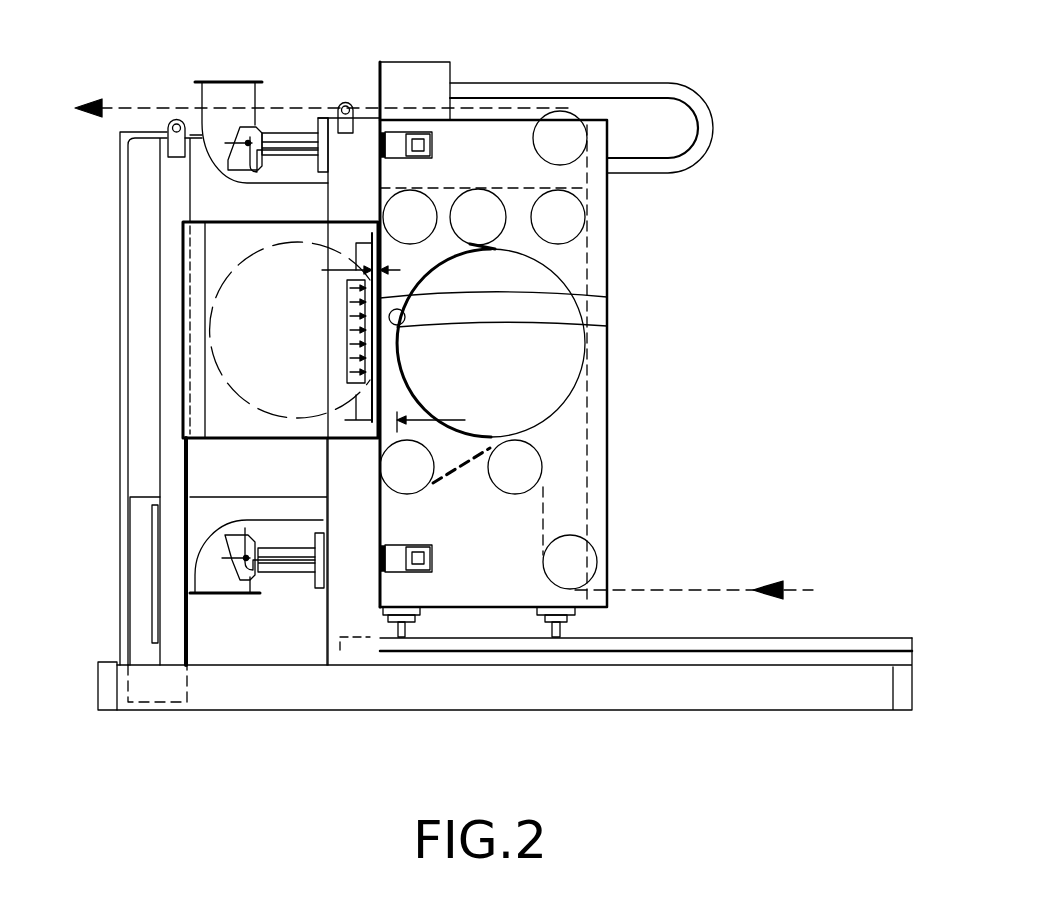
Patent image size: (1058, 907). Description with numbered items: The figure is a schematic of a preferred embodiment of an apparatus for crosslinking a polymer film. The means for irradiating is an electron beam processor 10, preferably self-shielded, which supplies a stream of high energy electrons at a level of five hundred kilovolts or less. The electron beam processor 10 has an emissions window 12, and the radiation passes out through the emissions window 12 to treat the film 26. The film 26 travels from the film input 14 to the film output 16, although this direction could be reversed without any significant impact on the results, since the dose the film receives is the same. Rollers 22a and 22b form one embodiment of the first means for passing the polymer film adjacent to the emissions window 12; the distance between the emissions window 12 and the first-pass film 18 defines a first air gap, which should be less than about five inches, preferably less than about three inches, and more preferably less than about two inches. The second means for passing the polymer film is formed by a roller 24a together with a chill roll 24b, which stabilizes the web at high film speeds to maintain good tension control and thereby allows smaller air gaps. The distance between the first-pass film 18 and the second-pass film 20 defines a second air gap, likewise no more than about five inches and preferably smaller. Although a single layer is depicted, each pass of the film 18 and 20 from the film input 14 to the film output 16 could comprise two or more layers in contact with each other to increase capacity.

The electron beam processor 10 is at (222, 401).
The emissions window 12 is at (355, 300).
The film input 14 is at (788, 590).
The film output 16 is at (125, 103).
The first-pass film 18 is at (607, 297).
The second-pass film 20 is at (607, 326).
The roller 22a is at (400, 482).
The roller 22b is at (412, 212).
The roller 24a is at (476, 205).
The chill roll 24b is at (535, 282).
The film 26 is at (455, 470).